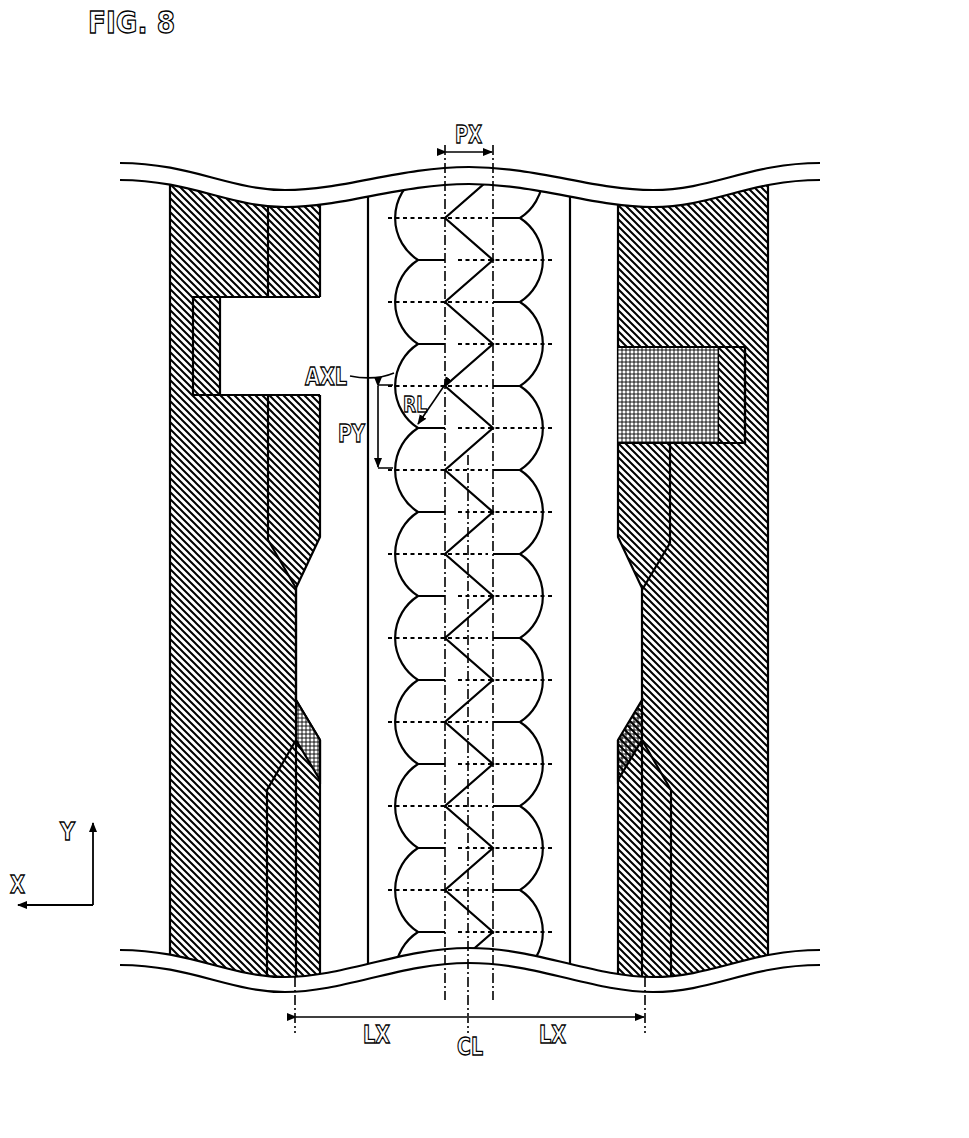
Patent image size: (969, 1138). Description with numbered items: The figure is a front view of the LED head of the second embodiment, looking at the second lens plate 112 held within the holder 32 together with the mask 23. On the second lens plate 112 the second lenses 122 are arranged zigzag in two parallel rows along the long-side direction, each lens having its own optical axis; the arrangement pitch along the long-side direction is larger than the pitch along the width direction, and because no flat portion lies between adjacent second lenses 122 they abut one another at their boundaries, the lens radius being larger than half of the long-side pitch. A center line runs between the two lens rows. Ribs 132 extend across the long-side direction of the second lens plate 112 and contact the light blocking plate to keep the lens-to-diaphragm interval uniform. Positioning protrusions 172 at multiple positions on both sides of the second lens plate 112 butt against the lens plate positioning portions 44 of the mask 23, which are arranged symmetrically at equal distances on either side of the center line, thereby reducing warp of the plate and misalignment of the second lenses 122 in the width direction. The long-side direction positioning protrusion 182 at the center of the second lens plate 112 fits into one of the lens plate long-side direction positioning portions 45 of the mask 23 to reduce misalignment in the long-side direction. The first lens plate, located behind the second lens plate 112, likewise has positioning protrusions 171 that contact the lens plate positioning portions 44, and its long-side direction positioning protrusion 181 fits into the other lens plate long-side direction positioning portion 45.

The mask 23 is at (170, 220).
The holder 32 is at (186, 258).
The lens plate positioning portions 44 is at (280, 625).
The lens plate long-side direction positioning portions 45 is at (202, 315).
The second lens plate 112 is at (618, 233).
The second lenses 122 is at (540, 268).
The ribs 132 is at (597, 310).
The positioning protrusions 171 is at (300, 728).
The positioning protrusions 172 is at (310, 677).
The long-side direction positioning protrusion 181 is at (690, 378).
The long-side direction positioning protrusion 182 is at (235, 358).